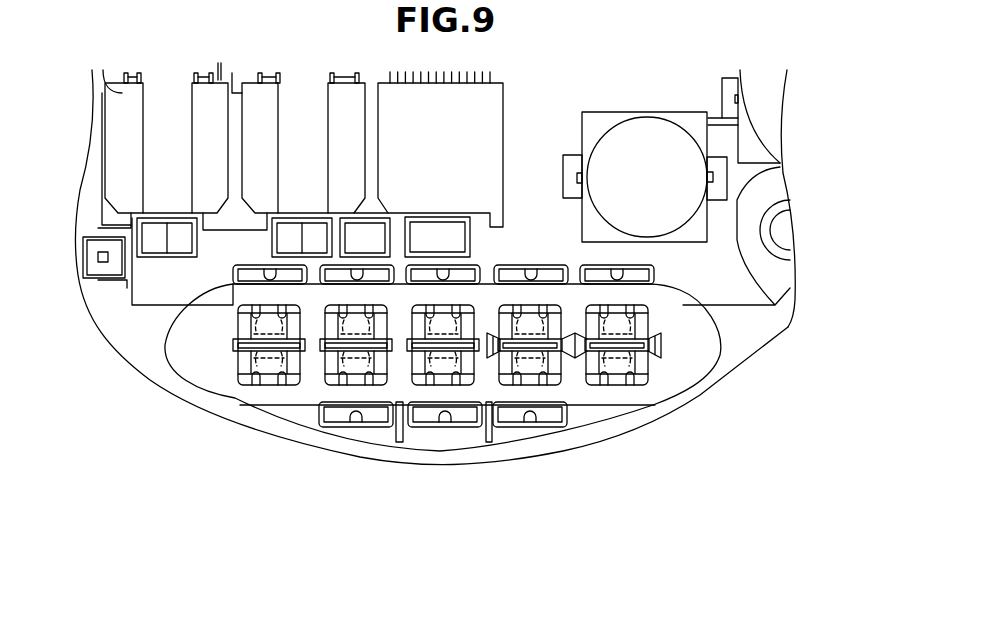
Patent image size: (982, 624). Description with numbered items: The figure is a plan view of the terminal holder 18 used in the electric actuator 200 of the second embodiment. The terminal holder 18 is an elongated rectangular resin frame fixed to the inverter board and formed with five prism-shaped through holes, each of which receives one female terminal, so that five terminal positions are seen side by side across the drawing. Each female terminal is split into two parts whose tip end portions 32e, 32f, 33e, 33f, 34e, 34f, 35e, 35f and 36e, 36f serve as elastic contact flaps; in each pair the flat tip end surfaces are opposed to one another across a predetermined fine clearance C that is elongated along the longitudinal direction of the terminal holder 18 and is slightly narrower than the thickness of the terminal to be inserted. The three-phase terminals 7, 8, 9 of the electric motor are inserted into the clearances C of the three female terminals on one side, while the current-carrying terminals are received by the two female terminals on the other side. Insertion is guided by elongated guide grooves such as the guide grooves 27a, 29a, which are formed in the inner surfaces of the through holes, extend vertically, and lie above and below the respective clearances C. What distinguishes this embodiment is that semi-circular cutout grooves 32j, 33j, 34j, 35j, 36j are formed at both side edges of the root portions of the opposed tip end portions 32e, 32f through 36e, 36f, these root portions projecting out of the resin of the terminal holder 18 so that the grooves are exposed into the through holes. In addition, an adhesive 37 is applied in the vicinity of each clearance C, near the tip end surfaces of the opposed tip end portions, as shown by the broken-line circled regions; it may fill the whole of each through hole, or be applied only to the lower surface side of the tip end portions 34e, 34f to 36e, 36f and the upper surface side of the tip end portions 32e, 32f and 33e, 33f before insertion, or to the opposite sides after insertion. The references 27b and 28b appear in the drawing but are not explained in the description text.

The three-phase terminal 7 is at (238, 337).
The three-phase terminal 8 is at (320, 349).
The three-phase terminal 9 is at (413, 333).
The terminal holder 18 is at (697, 396).
The electric actuator 200 is at (669, 432).
The guide groove 27a is at (791, 297).
The housing part 27b is at (742, 363).
The clip 28b is at (491, 333).
The guide groove 29a is at (233, 347).
The clearance C is at (655, 338).
The adhesive 37 is at (370, 338).
The tip end portion 32e is at (605, 312).
The tip end portion 32f is at (643, 514).
The cutout groove 32j is at (630, 312).
The tip end portion 33e is at (505, 312).
The tip end portion 33f is at (553, 380).
The cutout groove 33j is at (543, 312).
The tip end portion 34e is at (425, 312).
The tip end portion 34f is at (462, 380).
The cutout groove 34j is at (456, 312).
The tip end portion 35e is at (325, 312).
The tip end portion 35f is at (371, 380).
The cutout groove 35j is at (369, 312).
The tip end portion 36e is at (262, 328).
The tip end portion 36f is at (242, 374).
The cutout groove 36j is at (284, 312).